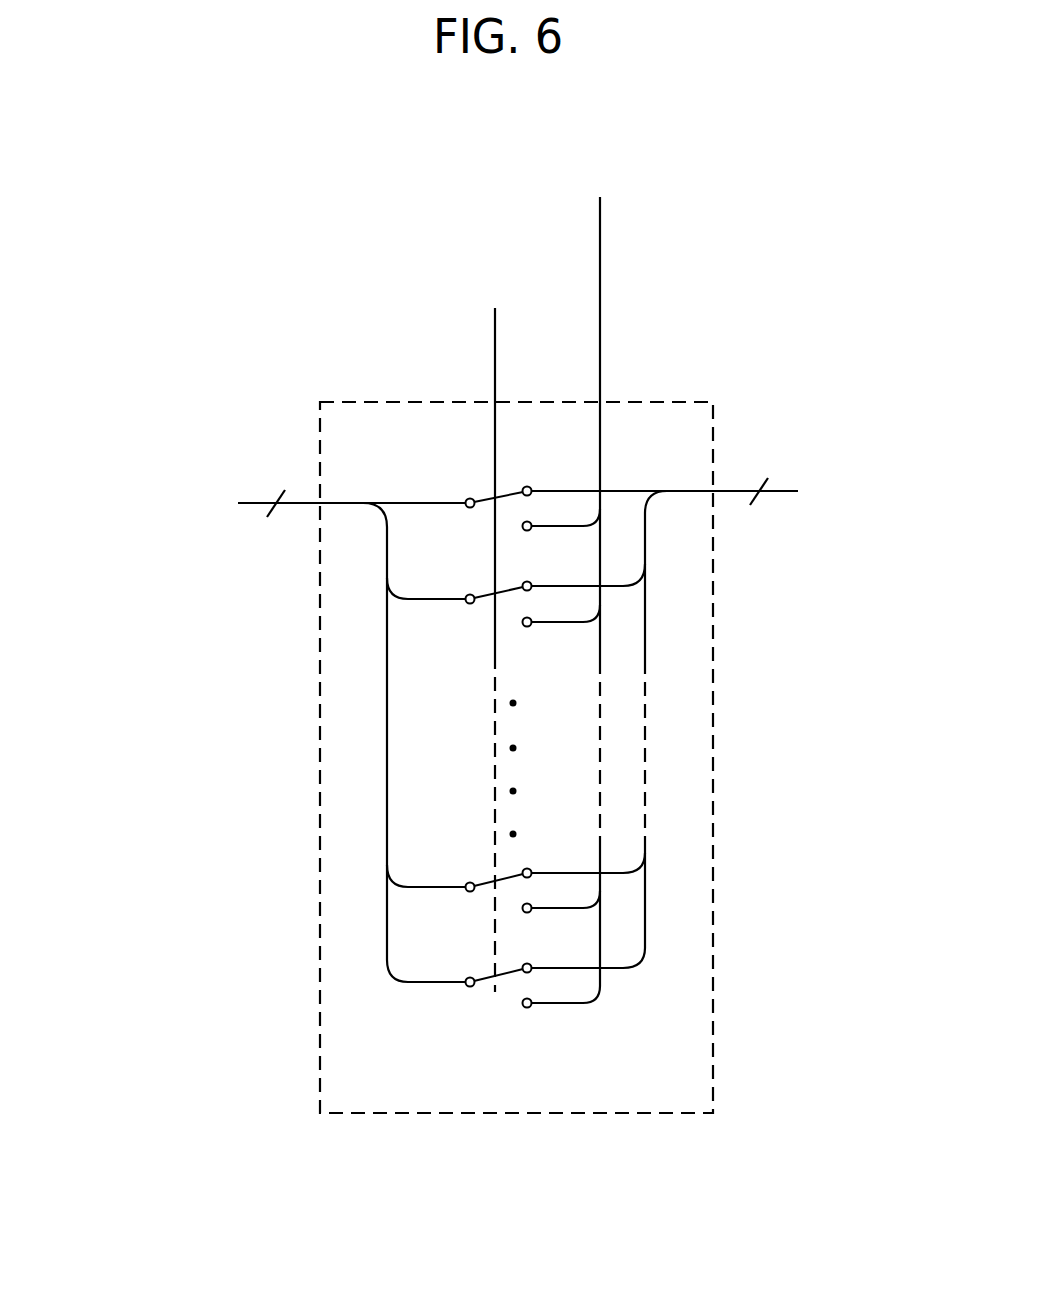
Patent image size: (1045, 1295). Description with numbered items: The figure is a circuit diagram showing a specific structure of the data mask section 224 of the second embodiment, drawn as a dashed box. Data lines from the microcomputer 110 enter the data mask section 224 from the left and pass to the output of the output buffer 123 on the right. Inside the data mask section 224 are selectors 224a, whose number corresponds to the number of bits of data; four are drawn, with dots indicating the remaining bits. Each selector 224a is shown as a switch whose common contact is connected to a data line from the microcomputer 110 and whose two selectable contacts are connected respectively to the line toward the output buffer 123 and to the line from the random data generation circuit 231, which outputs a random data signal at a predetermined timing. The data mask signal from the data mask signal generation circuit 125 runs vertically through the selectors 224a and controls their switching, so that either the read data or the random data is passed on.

The microcomputer 110 is at (259, 525).
The output buffer 123 is at (717, 520).
The data mask signal generation circuit 125 is at (393, 617).
The random data generation circuit 231 is at (556, 559).
The data mask section 224 is at (630, 1113).
The selector 224a is at (492, 1008).